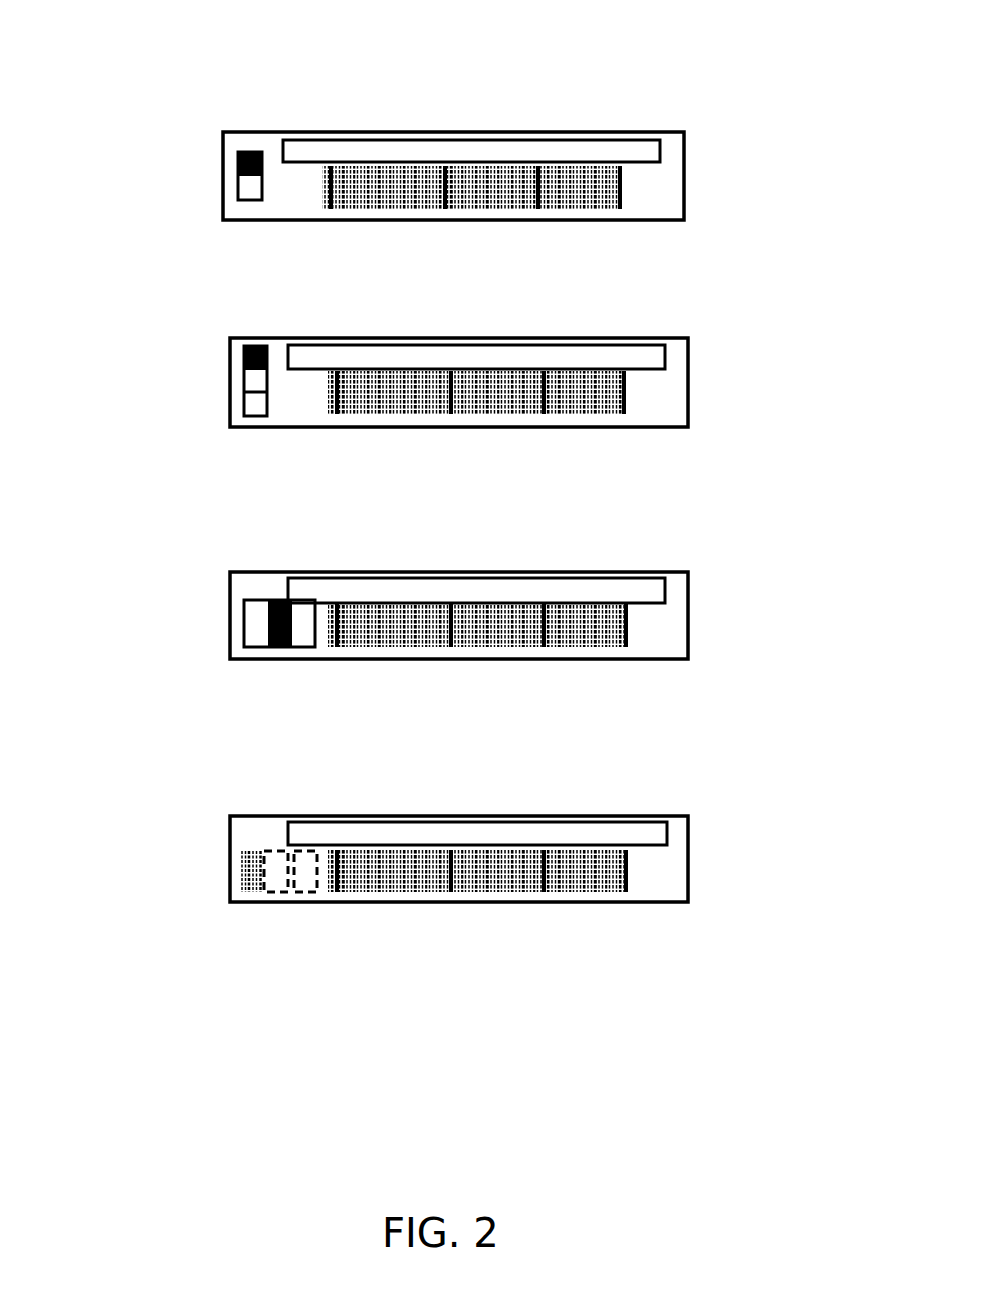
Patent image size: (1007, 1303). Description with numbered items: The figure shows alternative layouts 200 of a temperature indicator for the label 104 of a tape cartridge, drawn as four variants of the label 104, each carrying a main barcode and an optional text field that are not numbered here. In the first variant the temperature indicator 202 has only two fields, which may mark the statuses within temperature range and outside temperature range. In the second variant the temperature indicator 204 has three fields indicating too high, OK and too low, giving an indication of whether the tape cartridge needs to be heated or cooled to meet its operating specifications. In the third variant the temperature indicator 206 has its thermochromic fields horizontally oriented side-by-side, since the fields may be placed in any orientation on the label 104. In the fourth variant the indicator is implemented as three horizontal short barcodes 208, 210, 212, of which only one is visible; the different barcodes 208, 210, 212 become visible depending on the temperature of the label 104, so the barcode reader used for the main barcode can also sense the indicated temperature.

The alternative layouts 200 is at (147, 108).
The label 104 is at (674, 120).
The temperature indicator 202 is at (236, 187).
The temperature indicator 204 is at (241, 408).
The temperature indicator 206 is at (241, 645).
The horizontal short barcode 208 is at (255, 932).
The horizontal short barcode 210 is at (275, 895).
The horizontal short barcode 212 is at (308, 895).